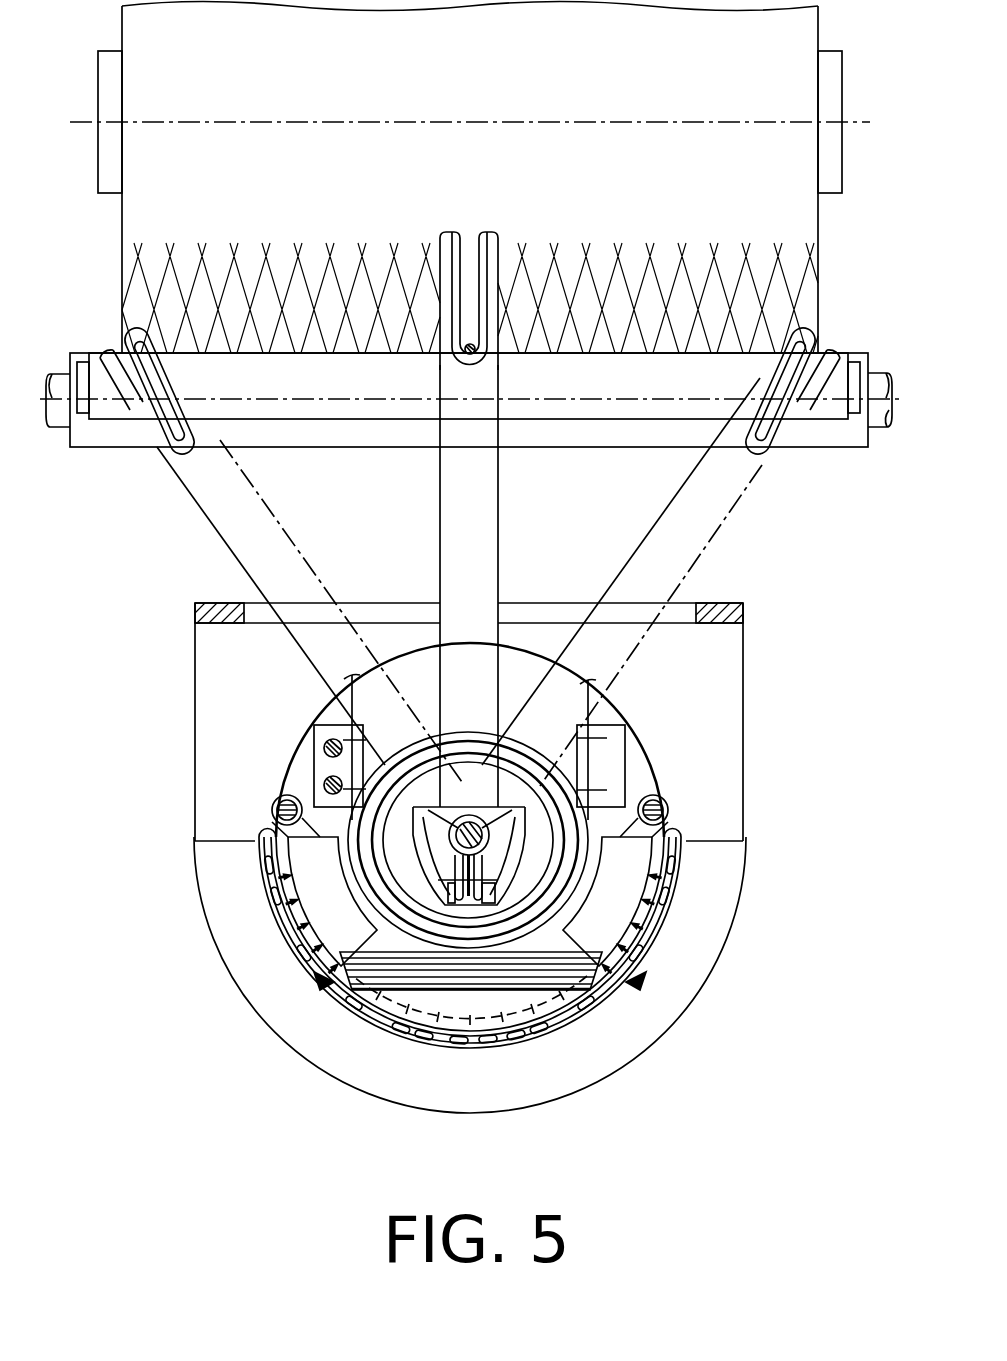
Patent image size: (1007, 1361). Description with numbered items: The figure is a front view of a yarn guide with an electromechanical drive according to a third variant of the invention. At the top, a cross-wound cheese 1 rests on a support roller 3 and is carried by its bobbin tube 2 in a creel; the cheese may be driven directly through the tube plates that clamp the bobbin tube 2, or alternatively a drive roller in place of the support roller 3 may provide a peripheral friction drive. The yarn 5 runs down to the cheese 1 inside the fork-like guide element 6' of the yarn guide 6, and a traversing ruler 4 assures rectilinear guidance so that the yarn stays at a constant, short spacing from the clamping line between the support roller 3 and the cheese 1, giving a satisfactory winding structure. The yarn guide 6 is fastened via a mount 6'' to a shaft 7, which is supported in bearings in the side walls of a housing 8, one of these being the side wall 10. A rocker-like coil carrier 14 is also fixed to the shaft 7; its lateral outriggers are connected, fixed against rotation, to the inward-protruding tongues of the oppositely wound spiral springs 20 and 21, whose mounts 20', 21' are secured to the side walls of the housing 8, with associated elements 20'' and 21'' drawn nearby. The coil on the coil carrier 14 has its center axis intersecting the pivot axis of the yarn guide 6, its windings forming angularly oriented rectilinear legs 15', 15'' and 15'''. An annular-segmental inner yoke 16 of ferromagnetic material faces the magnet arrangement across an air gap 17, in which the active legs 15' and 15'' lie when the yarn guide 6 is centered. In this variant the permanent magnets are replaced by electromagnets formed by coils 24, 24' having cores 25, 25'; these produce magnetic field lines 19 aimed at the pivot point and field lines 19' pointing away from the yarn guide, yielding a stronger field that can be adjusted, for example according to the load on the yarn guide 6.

The cheese 1 is at (782, 188).
The bobbin tube 2 is at (823, 68).
The support roller 3 is at (833, 428).
The traversing ruler 4 is at (717, 368).
The yarn 5 is at (478, 352).
The yarn guide 6 is at (459, 586).
The fork-like guide element 6' is at (492, 271).
The mount 6'' is at (462, 771).
The shaft 7 is at (478, 830).
The housing 8 is at (768, 660).
The side wall 10 is at (723, 710).
The coil carrier 14 is at (605, 903).
The coil leg 15' is at (689, 995).
The coil leg 15'' is at (243, 997).
The coil leg 15''' is at (372, 971).
The inner yoke 16 is at (317, 870).
The air gap 17 is at (540, 1052).
The magnetic field lines 19 is at (523, 1099).
The magnetic field lines 19' is at (422, 1099).
The spiral spring 20 is at (281, 784).
The mount 20' is at (293, 743).
The left adjusting pin 20'' is at (393, 749).
The spiral spring 21 is at (661, 797).
The mount 21' is at (643, 766).
The right adjusting pin 21'' is at (559, 750).
The coil 24 is at (585, 949).
The coil 24' is at (358, 1021).
The core 25 is at (637, 978).
The core 25' is at (306, 982).